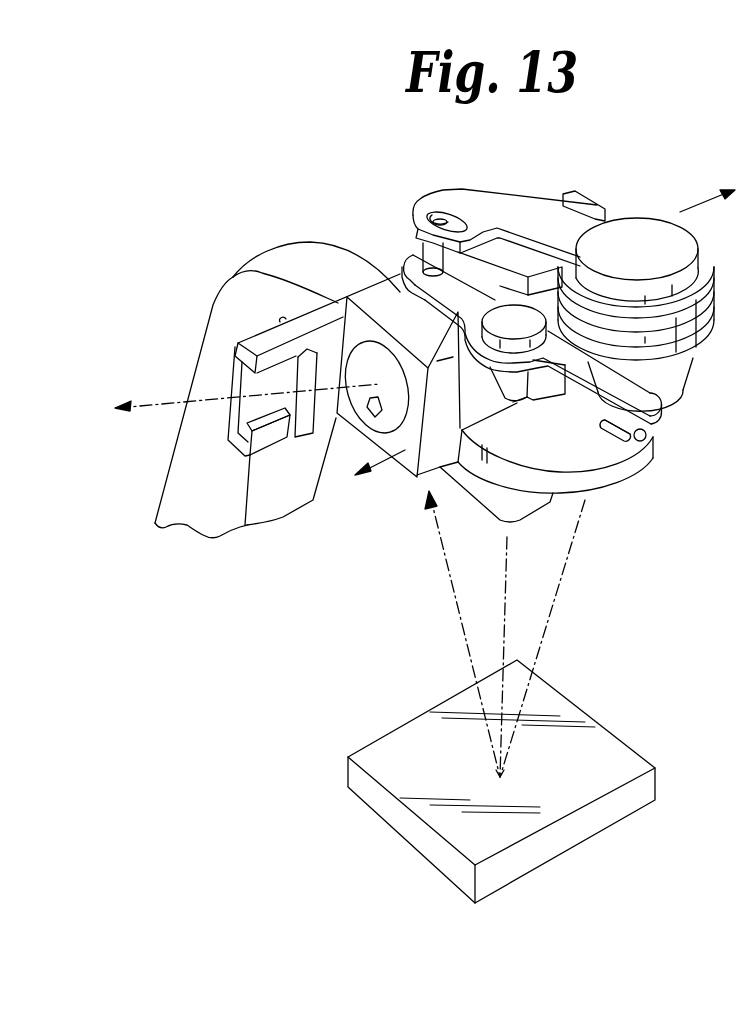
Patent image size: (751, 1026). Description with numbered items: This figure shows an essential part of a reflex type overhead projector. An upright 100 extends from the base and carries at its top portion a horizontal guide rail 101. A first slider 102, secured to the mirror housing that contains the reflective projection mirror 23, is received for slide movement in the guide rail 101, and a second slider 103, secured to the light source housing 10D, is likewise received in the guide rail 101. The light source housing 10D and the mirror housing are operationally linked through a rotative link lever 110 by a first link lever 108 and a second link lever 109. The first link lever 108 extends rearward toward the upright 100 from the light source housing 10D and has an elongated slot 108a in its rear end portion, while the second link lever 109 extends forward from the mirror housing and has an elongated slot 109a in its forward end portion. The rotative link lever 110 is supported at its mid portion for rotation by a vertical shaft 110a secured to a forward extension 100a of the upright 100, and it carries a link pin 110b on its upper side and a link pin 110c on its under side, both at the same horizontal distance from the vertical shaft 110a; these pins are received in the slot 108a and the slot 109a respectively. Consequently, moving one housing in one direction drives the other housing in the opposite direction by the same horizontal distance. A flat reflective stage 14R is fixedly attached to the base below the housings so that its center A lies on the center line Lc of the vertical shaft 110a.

The upright 100 is at (217, 302).
The horizontal guide rail 101 is at (268, 452).
The first slider 102 is at (315, 425).
The reflective projection mirror 23 is at (348, 422).
The first link lever 108 is at (509, 202).
The elongated slot 108a is at (457, 228).
The second slider 103 is at (507, 278).
The rotative link lever 110 is at (568, 354).
The vertical shaft 110a is at (520, 308).
The link pin 110b is at (418, 248).
The link pin 110c is at (650, 434).
The light source housing 10D is at (641, 227).
The forward extension 100a is at (542, 405).
The second link lever 109 is at (562, 466).
The elongated slot 109a is at (625, 447).
The center line Lc is at (505, 595).
The center A is at (505, 779).
The flat reflective stage 14R is at (648, 785).